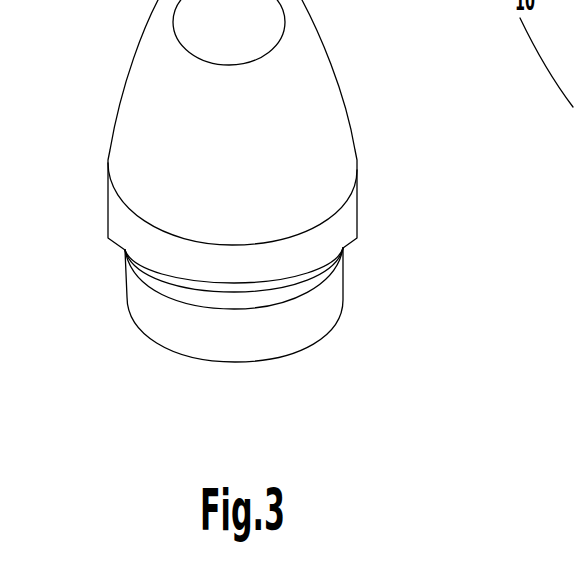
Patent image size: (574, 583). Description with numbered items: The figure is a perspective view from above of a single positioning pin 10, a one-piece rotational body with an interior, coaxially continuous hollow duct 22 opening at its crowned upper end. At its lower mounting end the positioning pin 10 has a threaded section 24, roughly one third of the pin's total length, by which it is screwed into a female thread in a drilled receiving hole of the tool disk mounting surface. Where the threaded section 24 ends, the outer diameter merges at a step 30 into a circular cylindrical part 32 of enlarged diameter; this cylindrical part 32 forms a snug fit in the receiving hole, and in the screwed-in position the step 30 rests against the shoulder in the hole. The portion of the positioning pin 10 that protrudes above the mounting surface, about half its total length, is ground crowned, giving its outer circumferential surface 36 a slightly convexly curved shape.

The positioning pin 10 is at (281, 249).
The hollow duct 22 is at (262, 0).
The threaded section 24 is at (168, 318).
The step 30 is at (156, 273).
The circular cylindrical part 32 is at (123, 222).
The outer circumferential surface 36 is at (167, 103).